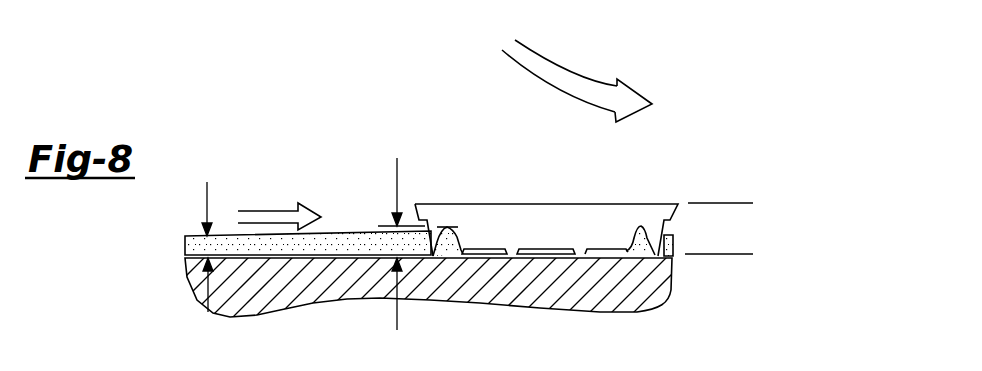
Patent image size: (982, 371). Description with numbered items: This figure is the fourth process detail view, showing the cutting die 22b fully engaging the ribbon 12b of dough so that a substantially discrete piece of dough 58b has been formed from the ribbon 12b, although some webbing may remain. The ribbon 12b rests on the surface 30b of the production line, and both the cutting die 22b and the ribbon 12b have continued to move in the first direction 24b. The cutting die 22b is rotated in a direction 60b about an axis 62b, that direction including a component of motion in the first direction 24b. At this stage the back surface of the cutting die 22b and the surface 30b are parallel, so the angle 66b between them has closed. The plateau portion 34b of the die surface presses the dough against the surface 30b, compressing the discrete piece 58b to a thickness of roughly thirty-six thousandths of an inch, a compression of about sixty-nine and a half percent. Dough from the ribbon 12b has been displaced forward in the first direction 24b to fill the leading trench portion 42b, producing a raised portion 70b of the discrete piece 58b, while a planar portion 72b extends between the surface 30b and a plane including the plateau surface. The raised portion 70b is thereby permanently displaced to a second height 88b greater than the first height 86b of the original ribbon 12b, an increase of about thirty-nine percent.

The ribbon 12b is at (347, 245).
The cutting die 22b is at (371, 109).
The first direction 24b is at (263, 212).
The surface of the production line 30b is at (545, 258).
The plateau portion 34b is at (551, 248).
The leading trench portion 42b is at (639, 228).
The discrete piece of dough 58b is at (647, 258).
The direction 60b is at (535, 84).
The axis 62b is at (613, 7).
The angle 66b is at (760, 290).
The raised portion 70b is at (446, 227).
The planar portion 72b is at (452, 244).
The first height 86b is at (205, 203).
The second height 88b is at (393, 312).